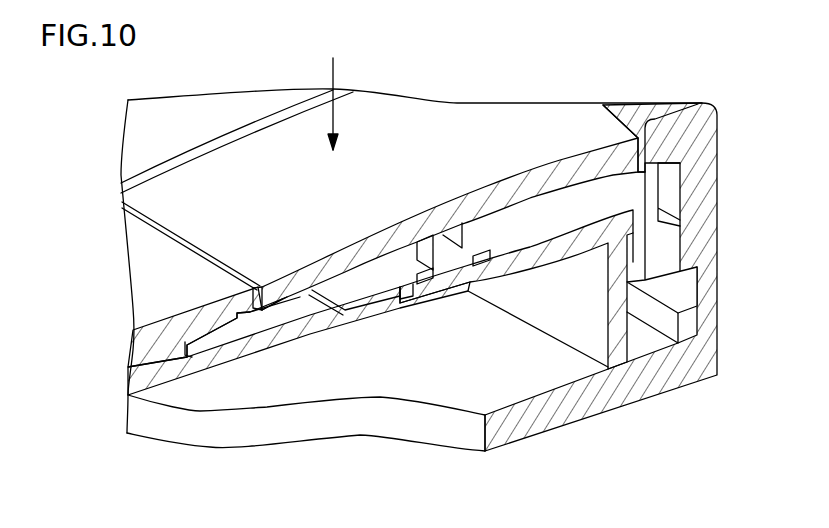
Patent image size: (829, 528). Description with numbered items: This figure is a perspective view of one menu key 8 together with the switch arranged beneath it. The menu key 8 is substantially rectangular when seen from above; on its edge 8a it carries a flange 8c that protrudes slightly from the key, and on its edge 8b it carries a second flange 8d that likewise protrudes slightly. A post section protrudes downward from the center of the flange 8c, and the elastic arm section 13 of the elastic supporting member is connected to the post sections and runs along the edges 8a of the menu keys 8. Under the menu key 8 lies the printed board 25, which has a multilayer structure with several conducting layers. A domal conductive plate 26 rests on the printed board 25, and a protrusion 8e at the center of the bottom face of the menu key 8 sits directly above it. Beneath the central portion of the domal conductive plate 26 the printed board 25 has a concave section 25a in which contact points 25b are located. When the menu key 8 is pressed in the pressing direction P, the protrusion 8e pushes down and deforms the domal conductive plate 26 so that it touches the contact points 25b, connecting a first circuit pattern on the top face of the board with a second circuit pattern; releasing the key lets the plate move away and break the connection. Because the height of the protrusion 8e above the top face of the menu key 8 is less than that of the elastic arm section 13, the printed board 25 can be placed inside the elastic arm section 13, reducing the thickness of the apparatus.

The menu key 8 is at (428, 142).
The edge of the menu key 8a is at (640, 152).
The edge of the menu key 8b is at (273, 292).
The flange 8c is at (652, 180).
The flange 8d is at (257, 322).
The protrusion 8e is at (463, 250).
The elastic arm section 13 is at (668, 252).
The printed board 25 is at (565, 258).
The concave section 25a is at (397, 305).
The contact points 25b is at (478, 272).
The domal conductive plate 26 is at (350, 290).
The pressing direction P is at (340, 70).